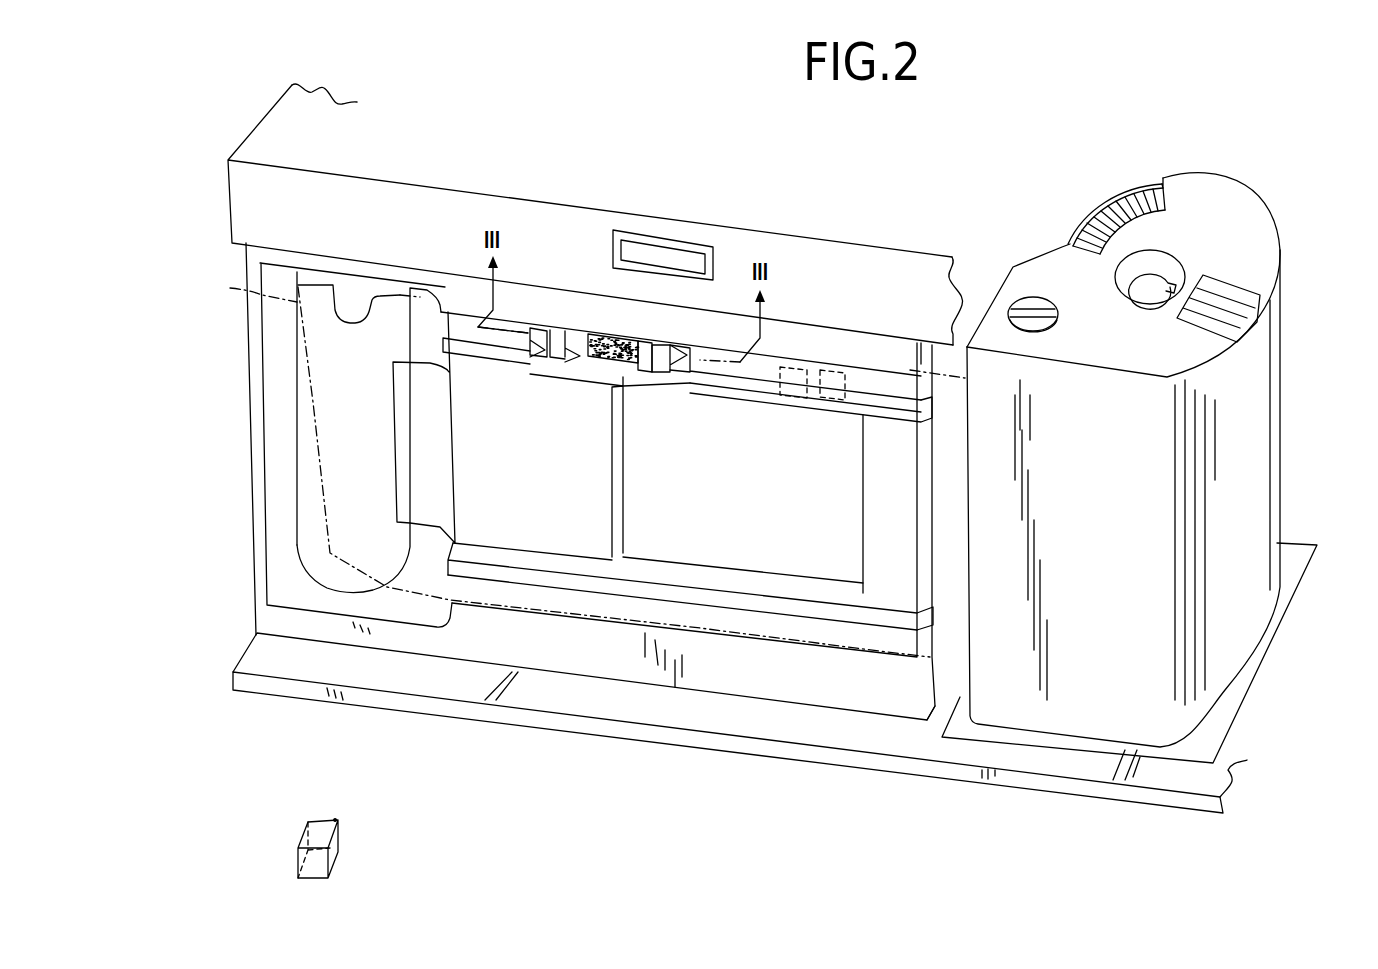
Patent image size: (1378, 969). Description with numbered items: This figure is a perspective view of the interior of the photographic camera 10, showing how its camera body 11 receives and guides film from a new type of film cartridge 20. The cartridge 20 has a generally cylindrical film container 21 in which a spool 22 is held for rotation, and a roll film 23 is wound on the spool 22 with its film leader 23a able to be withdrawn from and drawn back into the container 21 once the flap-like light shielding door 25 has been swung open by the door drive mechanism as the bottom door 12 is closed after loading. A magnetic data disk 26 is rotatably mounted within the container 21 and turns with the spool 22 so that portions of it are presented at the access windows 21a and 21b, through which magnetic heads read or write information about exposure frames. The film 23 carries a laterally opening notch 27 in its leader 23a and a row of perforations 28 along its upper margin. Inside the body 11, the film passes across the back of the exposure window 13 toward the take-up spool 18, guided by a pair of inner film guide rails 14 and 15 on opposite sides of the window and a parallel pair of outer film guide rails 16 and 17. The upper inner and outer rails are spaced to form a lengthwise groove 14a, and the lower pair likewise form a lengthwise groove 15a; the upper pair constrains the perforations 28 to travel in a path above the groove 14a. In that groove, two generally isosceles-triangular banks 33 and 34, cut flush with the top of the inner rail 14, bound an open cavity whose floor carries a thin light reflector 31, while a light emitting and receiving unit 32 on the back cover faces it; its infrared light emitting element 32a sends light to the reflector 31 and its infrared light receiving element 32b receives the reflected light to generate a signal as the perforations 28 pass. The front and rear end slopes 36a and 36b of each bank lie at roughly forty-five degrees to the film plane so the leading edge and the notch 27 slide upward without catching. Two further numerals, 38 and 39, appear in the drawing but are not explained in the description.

The photographic camera 10 is at (611, 163).
The camera body 11 is at (264, 118).
The bottom door 12 is at (1057, 740).
The exposure window 13 is at (793, 480).
The inner film guide rail 14 is at (738, 390).
The lengthwise groove 14a is at (887, 378).
The inner film guide rail 15 is at (657, 580).
The lengthwise groove 15a is at (713, 597).
The outer film guide rail 16 is at (788, 329).
The outer film guide rail 17 is at (802, 693).
The take-up spool 18 is at (297, 455).
The film cartridge 20 is at (1279, 193).
The film container 21 is at (1268, 352).
The access window 21a is at (1161, 192).
The access window 21b is at (1278, 294).
The spool 22 is at (1172, 263).
The roll film 23 is at (297, 360).
The film leader 23a is at (230, 288).
The light shielding door 25 is at (1033, 298).
The magnetic data disk 26 is at (1113, 225).
The notch 27 is at (343, 293).
The perforations 28 is at (833, 370).
The light reflector 31 is at (613, 333).
The light emitting and receiving unit 32 is at (291, 831).
The infrared light emitting element 32a is at (313, 822).
The infrared light receiving element 32b is at (340, 817).
The bank 33 is at (658, 353).
The bank 34 is at (557, 333).
The front end slope 36a is at (580, 357).
The rear end slope 36b is at (537, 347).
The break line 38 is at (975, 272).
The channel 39 is at (291, 499).